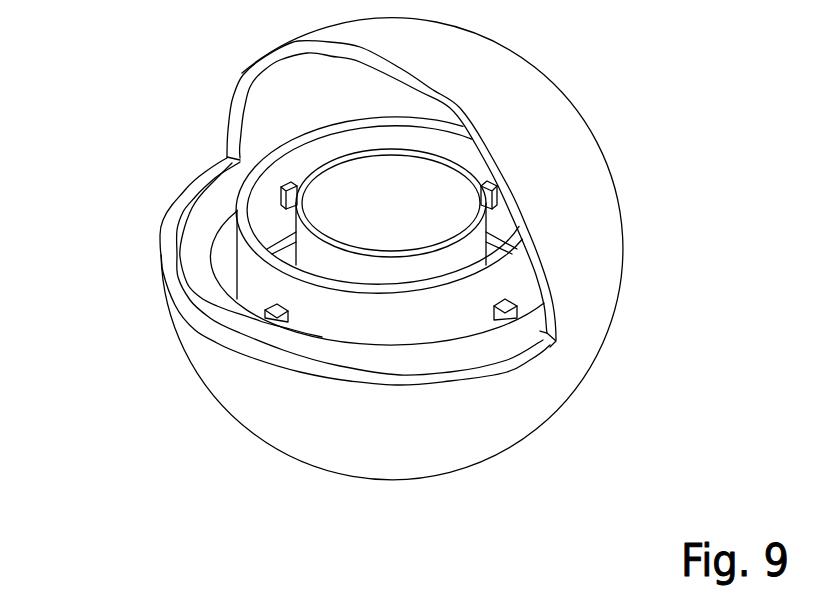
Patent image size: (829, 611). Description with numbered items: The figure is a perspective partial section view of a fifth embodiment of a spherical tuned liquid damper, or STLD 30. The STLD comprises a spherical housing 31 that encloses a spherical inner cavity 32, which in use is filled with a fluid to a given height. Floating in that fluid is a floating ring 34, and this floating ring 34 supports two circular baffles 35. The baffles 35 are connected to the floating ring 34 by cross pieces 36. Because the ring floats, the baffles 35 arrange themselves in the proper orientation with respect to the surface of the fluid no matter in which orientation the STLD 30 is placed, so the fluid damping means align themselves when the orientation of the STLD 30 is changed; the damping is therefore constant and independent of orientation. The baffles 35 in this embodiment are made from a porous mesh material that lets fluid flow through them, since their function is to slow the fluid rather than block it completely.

The fifth embodiment of an STLD 30 is at (140, 74).
The spherical housing 31 is at (550, 108).
The spherical inner cavity 32 is at (273, 100).
The floating ring 34 is at (470, 353).
The circular baffles 35 is at (313, 143).
The cross pieces 36 is at (273, 305).